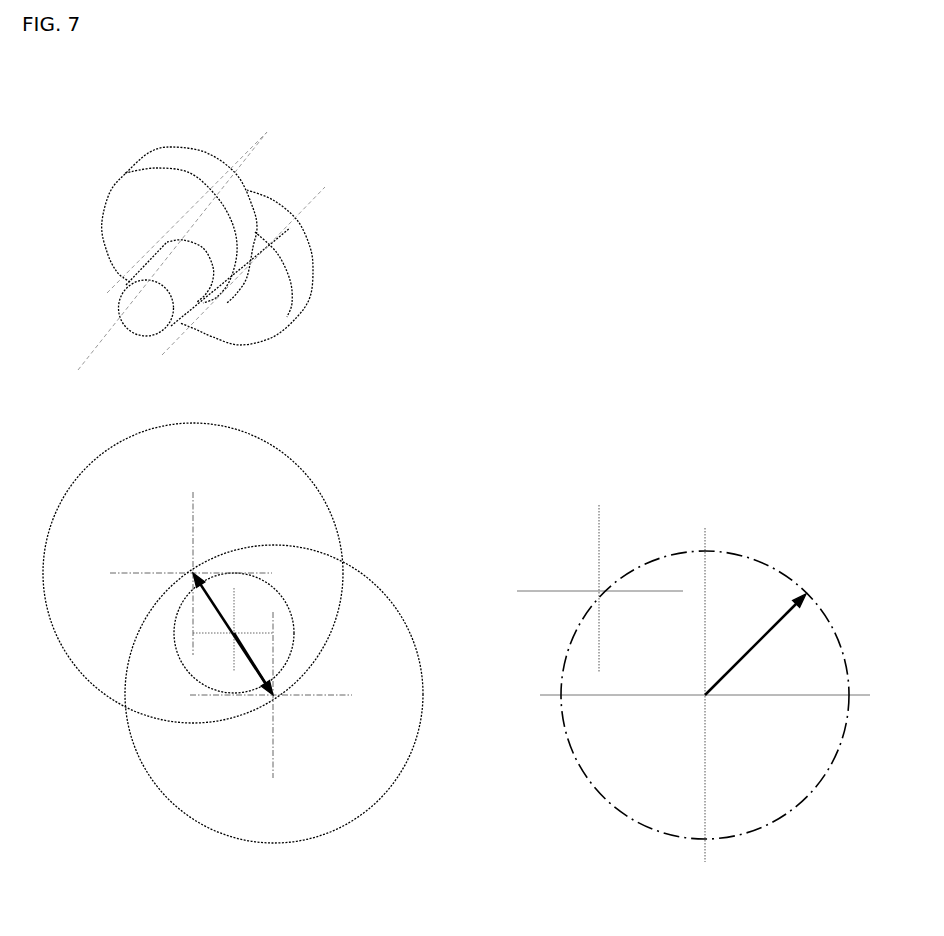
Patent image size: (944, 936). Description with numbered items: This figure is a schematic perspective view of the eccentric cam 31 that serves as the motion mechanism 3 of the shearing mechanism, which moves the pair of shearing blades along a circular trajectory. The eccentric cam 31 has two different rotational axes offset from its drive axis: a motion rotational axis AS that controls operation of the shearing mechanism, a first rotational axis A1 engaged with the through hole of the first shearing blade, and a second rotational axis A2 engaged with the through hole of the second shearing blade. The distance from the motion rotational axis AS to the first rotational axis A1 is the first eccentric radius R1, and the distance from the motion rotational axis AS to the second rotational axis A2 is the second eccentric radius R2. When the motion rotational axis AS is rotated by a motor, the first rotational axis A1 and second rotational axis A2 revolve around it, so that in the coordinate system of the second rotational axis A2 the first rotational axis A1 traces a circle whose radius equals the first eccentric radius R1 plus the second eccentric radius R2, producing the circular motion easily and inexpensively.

The eccentric cam 31 is at (164, 166).
The motion mechanism 3 is at (207, 202).
The first rotational axis A1 is at (117, 283).
The second rotational axis A2 is at (183, 338).
The motion rotational axis AS is at (112, 335).
The first eccentric radius R1 is at (234, 628).
The second eccentric radius R2 is at (257, 663).